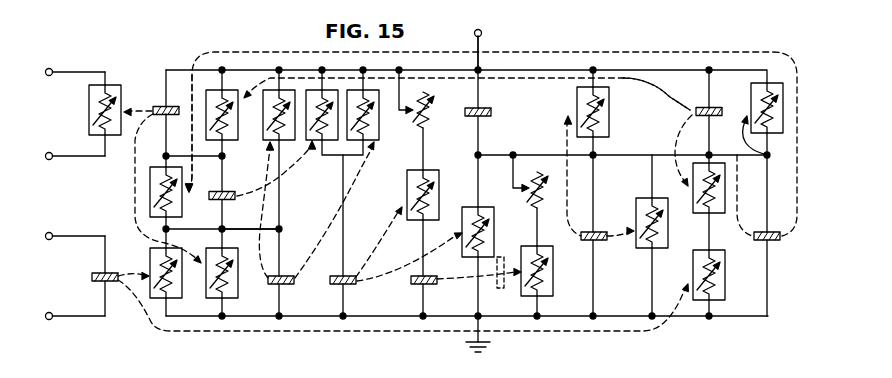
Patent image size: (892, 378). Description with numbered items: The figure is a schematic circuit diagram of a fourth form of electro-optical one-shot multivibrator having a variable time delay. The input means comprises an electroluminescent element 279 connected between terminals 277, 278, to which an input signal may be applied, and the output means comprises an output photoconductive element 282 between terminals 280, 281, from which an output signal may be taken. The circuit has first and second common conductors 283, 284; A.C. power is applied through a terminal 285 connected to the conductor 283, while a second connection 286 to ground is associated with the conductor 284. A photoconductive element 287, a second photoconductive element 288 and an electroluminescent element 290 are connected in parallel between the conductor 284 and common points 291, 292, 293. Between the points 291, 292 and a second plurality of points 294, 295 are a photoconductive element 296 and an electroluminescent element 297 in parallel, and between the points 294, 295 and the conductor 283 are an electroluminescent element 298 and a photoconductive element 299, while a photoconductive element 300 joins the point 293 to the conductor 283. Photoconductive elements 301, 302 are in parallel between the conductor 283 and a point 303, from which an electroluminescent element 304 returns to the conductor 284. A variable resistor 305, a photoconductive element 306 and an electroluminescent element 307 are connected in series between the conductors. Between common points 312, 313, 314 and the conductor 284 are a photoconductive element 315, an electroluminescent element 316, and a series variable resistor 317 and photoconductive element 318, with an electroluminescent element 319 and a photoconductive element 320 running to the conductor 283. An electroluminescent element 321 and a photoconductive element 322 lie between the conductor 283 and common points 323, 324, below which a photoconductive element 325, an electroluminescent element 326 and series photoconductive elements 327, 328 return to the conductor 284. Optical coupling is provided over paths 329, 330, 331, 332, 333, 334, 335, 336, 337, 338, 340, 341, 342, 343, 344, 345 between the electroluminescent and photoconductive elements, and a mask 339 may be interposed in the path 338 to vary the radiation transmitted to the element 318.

The terminal 277 is at (50, 312).
The terminal 278 is at (50, 240).
The electroluminescent element 279 is at (92, 277).
The terminal 280 is at (48, 152).
The terminal 281 is at (49, 68).
The output photoconductive element 282 is at (89, 100).
The first common conductor 283 is at (166, 70).
The second common conductor 284 is at (747, 317).
The terminal 285 is at (483, 33).
The connection to base reference potential 286 is at (488, 343).
The photoconductive element 287 is at (170, 298).
The second photoconductive element 288 is at (236, 298).
The electroluminescent element 290 is at (282, 285).
The common point 291 is at (162, 229).
The common point 292 is at (222, 228).
The common point 293 is at (282, 226).
The point 294 is at (166, 156).
The point 295 is at (226, 155).
The photoconductive element 296 is at (150, 195).
The electroluminescent element 297 is at (223, 192).
The electroluminescent element 298 is at (154, 105).
The photoconductive element 299 is at (229, 88).
The photoconductive element 300 is at (293, 52).
The photoconductive element 301 is at (325, 88).
The photoconductive element 302 is at (376, 85).
The point 303 is at (342, 158).
The electroluminescent element 304 is at (346, 285).
The variable resistor 305 is at (421, 93).
The photoconductive element 306 is at (420, 169).
The electroluminescent element 307 is at (429, 285).
The common point 312 is at (477, 154).
The common point 313 is at (513, 153).
The common point 314 is at (600, 153).
The photoconductive element 315 is at (476, 206).
The electroluminescent element 316 is at (592, 241).
The variable resistor 317 is at (526, 183).
The photoconductive element 318 is at (550, 296).
The electroluminescent element 319 is at (488, 107).
The photoconductive element 320 is at (576, 104).
The electroluminescent element 321 is at (700, 106).
The photoconductive element 322 is at (764, 83).
The common point 323 is at (708, 153).
The common point 324 is at (745, 108).
The photoconductive element 325 is at (636, 242).
The electroluminescent element 326 is at (776, 240).
The photoconductive element 327 is at (693, 192).
The photoconductive element 328 is at (694, 272).
The path 329 is at (140, 270).
The path 330 is at (387, 332).
The path 331 is at (262, 248).
The path 332 is at (358, 193).
The path 333 is at (288, 177).
The path 334 is at (138, 109).
The path 335 is at (135, 212).
The path 336 is at (378, 240).
The path 337 is at (388, 270).
The path 338 is at (466, 280).
The mask 339 is at (493, 283).
The path 340 is at (566, 150).
The path 341 is at (622, 238).
The path 342 is at (548, 78).
The path 343 is at (682, 124).
The path 344 is at (638, 51).
The path 345 is at (736, 214).